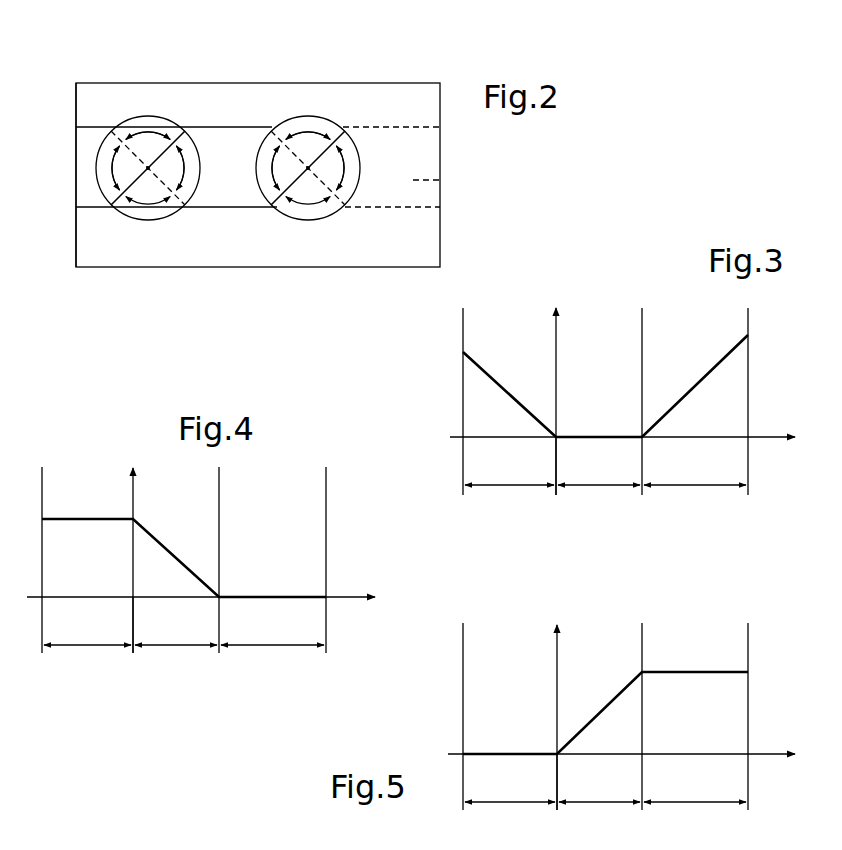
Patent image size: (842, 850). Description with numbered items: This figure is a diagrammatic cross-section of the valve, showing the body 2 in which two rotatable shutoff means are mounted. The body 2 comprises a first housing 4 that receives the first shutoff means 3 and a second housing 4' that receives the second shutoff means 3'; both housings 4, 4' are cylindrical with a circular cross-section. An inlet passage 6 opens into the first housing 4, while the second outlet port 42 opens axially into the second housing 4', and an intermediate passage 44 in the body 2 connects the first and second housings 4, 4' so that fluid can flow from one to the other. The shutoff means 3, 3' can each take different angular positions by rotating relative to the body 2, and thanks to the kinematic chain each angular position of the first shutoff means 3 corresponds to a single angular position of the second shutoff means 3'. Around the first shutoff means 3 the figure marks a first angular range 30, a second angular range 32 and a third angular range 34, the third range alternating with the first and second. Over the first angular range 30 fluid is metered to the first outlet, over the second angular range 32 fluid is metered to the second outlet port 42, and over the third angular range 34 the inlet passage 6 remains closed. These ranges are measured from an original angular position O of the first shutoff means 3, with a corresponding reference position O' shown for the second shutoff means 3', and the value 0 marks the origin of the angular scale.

In FIG. 2, the body 2 is at (70, 264).
In FIG. 2, the first shutoff means 3 is at (148, 213).
In FIG. 2, the second shutoff means 3' is at (302, 213).
In FIG. 2, the first housing 4 is at (106, 188).
In FIG. 2, the second housing 4' is at (332, 221).
In FIG. 2, the inlet passage 6 is at (93, 140).
In FIG. 2, the first angular range 30 is at (200, 173).
In FIG. 3, the first angular range 30 is at (509, 473).
In FIG. 4, the first angular range 30 is at (87, 633).
In FIG. 5, the first angular range 30 is at (510, 790).
In FIG. 2, the second angular range 32 is at (107, 162).
In FIG. 3, the second angular range 32 is at (695, 473).
In FIG. 4, the second angular range 32 is at (272, 633).
In FIG. 5, the second angular range 32 is at (695, 790).
In FIG. 2, the third angular range 34 is at (153, 132).
In FIG. 3, the third angular range 34 is at (599, 473).
In FIG. 4, the third angular range 34 is at (176, 633).
In FIG. 5, the third angular range 34 is at (599, 790).
In FIG. 2, the second outlet port 42 is at (440, 180).
In FIG. 2, the intermediate passage 44 is at (227, 143).
In FIG. 2, the original angular position O is at (330, 134).
In FIG. 2, the center of first roller O' is at (174, 135).
In FIG. 3, the origin of graph 0 is at (555, 480).
In FIG. 4, the origin of graph 0 is at (132, 640).
In FIG. 5, the origin of graph 0 is at (556, 797).